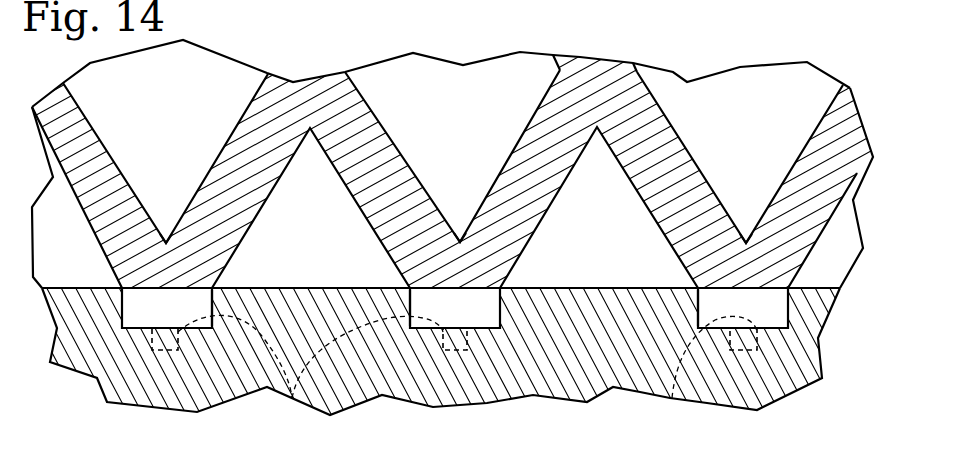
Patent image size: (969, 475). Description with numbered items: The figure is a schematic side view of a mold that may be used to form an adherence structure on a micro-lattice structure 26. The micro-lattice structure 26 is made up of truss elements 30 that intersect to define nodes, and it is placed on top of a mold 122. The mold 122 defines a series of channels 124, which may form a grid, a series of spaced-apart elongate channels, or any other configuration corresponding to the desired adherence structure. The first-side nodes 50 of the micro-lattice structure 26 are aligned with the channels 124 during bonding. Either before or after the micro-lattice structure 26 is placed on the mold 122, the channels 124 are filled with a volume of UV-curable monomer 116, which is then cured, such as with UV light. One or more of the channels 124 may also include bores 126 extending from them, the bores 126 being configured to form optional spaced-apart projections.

The micro-lattice structure 26 is at (724, 47).
The truss elements 30 is at (215, 165).
The first-side nodes 50 is at (179, 278).
The UV-curable monomer 116 is at (185, 318).
The mold 122 is at (826, 358).
The channels 124 is at (204, 305).
The bores 126 is at (672, 419).